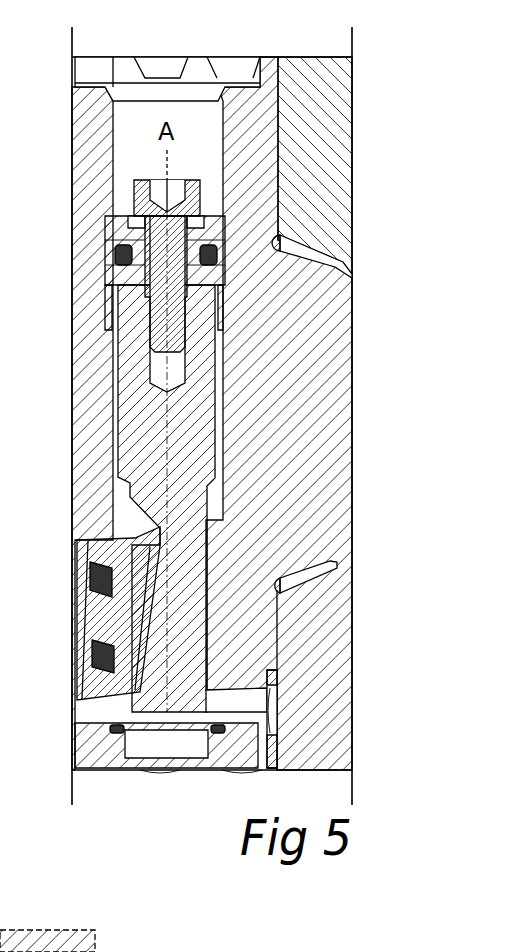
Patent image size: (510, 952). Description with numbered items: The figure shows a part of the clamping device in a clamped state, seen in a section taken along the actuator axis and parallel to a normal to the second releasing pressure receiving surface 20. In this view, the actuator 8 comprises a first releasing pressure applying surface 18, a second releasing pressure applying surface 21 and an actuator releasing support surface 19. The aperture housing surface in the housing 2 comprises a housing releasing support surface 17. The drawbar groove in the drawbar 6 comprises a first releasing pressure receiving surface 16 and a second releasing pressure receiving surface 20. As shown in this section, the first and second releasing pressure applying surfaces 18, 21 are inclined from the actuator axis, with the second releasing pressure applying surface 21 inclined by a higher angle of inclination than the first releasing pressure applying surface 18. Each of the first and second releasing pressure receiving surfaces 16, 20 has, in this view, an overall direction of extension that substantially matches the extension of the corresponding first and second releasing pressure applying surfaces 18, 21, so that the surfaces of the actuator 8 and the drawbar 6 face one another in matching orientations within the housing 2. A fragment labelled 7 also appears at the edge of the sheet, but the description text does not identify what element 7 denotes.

The housing 2 is at (322, 408).
The drawbar 6 is at (131, 566).
The base plate 7 is at (47, 923).
The actuator 8 is at (148, 422).
The first releasing pressure receiving surface 16 is at (150, 588).
The housing releasing support surface 17 is at (204, 622).
The first releasing pressure applying surface 18 is at (143, 550).
The actuator releasing support surface 19 is at (205, 663).
The second releasing pressure receiving surface 20 is at (147, 645).
The second releasing pressure applying surface 21 is at (143, 660).